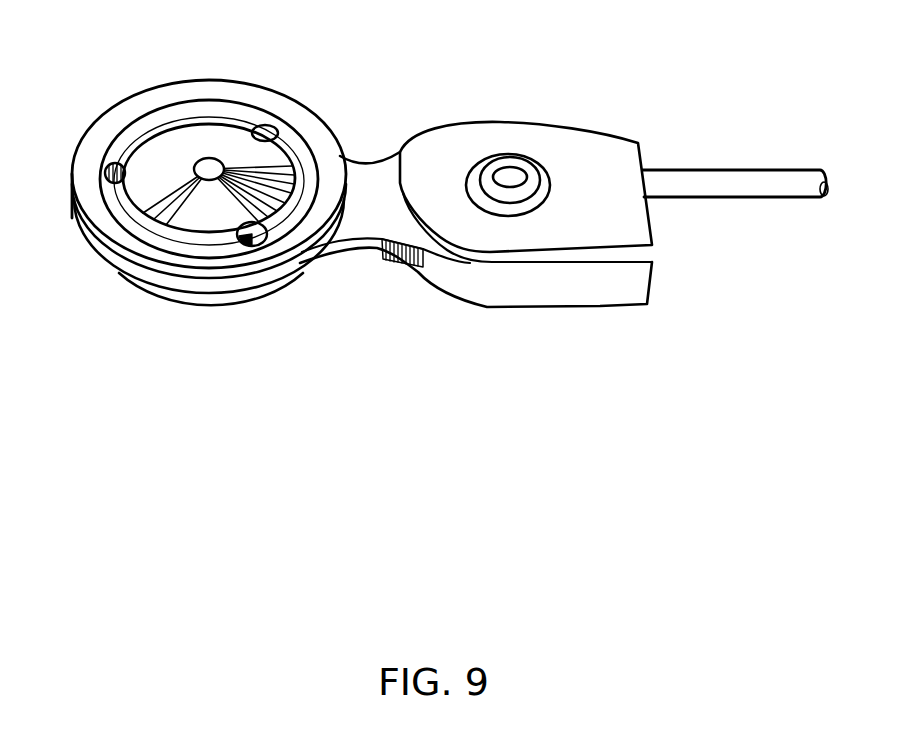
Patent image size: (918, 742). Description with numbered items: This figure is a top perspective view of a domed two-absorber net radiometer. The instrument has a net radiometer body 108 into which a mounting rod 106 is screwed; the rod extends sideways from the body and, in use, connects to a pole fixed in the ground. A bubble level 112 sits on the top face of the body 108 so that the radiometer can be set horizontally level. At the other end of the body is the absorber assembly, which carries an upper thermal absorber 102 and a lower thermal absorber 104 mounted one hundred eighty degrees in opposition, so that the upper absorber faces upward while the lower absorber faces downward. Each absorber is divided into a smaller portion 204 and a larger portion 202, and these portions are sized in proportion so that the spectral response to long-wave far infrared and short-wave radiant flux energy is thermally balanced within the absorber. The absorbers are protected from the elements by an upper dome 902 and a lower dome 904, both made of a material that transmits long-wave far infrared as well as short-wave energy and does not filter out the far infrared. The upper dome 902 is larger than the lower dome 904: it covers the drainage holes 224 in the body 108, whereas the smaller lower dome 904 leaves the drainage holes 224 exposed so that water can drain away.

The upper thermal absorber 102 is at (97, 250).
The lower thermal absorber 104 is at (137, 283).
The mounting rod 106 is at (767, 167).
The net radiometer body 108 is at (448, 130).
The bubble level 112 is at (533, 163).
The larger portion 202 is at (295, 160).
The smaller portion 204 is at (203, 158).
The drainage holes 224 is at (110, 163).
The upper dome 902 is at (260, 93).
The lower dome 904 is at (175, 300).